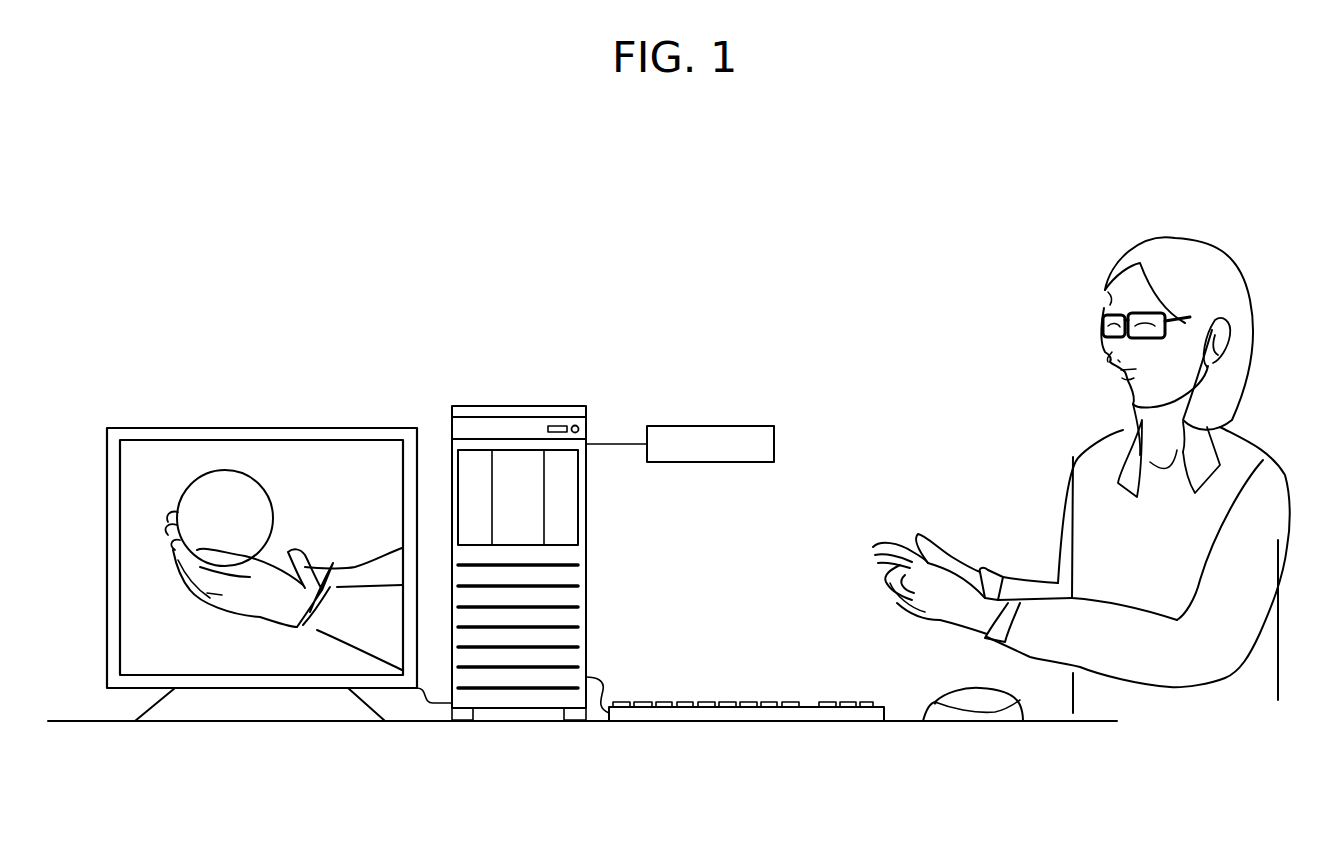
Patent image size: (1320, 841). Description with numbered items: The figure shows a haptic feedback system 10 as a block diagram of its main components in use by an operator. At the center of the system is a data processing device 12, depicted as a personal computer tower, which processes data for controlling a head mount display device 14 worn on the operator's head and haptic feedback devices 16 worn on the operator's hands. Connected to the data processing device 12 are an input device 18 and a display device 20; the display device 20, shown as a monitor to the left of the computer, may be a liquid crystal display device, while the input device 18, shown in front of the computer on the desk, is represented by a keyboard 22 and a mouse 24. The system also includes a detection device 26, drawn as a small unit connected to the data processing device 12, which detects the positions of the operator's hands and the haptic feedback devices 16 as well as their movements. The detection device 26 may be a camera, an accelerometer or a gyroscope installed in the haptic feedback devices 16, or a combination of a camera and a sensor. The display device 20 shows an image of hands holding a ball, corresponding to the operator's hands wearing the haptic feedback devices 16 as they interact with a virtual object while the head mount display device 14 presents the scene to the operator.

The haptic feedback system 10 is at (653, 166).
The data processing device 12 is at (485, 406).
The head mount display device 14 is at (1140, 312).
The haptic feedback devices 16 is at (952, 557).
The input device 18 is at (790, 722).
The display device 20 is at (204, 428).
The keyboard 22 is at (655, 715).
The mouse 24 is at (1002, 718).
The detection device 26 is at (757, 426).